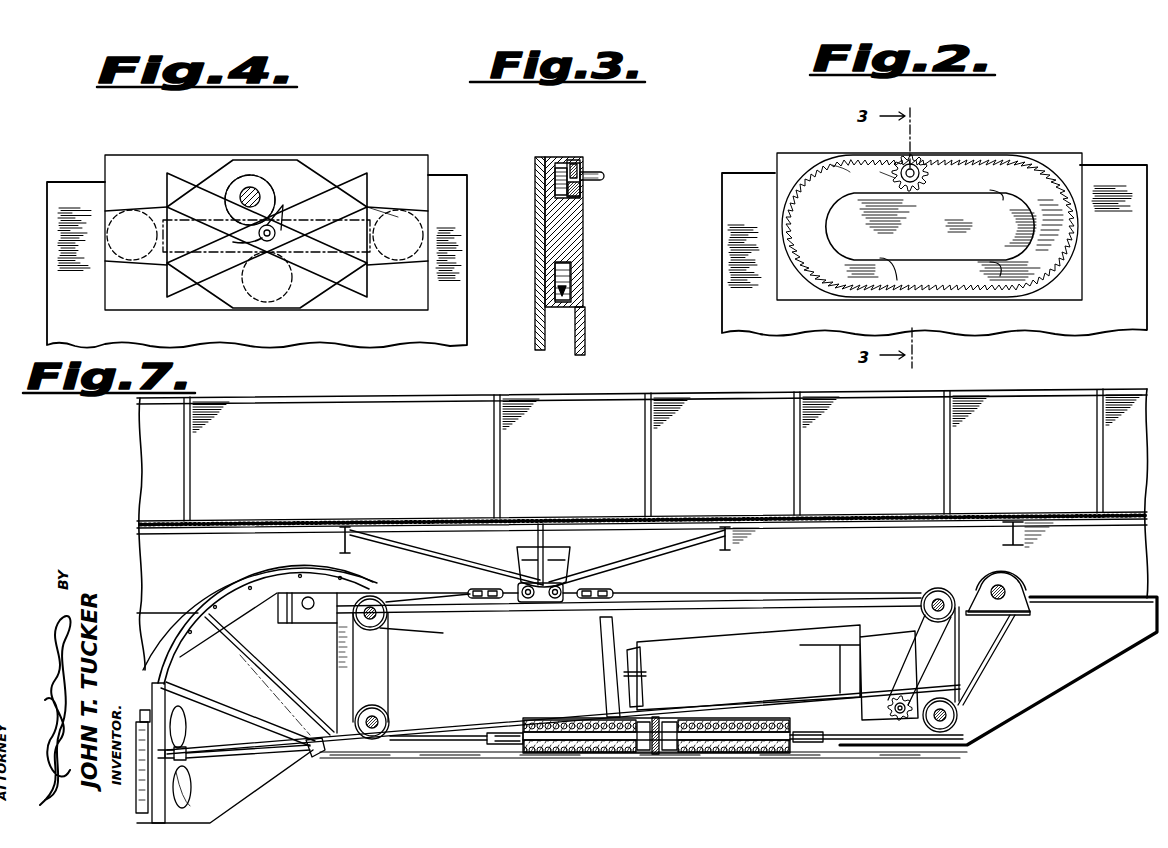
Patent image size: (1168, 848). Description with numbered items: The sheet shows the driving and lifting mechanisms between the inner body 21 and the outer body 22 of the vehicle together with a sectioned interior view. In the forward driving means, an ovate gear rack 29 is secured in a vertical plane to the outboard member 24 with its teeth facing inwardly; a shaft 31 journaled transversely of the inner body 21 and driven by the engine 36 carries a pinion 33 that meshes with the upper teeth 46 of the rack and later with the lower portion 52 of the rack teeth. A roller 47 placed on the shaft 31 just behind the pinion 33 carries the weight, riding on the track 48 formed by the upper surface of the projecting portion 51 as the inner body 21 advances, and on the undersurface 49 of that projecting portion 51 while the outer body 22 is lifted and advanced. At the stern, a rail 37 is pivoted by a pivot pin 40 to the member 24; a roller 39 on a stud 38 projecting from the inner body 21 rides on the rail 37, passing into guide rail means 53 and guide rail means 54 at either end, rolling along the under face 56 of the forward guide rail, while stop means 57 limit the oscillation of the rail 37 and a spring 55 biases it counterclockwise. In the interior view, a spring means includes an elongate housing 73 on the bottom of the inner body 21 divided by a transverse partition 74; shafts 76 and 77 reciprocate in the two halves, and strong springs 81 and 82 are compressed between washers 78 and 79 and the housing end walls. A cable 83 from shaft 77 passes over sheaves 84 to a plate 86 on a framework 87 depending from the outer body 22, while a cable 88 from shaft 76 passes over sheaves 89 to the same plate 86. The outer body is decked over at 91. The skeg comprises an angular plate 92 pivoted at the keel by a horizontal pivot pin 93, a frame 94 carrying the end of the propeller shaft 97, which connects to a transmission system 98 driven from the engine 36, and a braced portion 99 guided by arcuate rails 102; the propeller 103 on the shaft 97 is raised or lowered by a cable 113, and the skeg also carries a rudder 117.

In FIG. 7, the inner body 21 is at (1092, 686).
In FIG. 7, the outer body 22 is at (369, 494).
In FIG. 4, the outboard member 24 is at (73, 195).
In FIG. 2, the outboard member 24 is at (730, 185).
In FIG. 2, the gear rack 29 is at (1003, 160).
In FIG. 3, the shaft 31 is at (600, 174).
In FIG. 2, the shaft 31 is at (908, 168).
In FIG. 7, the shaft 31 is at (1003, 590).
In FIG. 3, the pinion 33 is at (553, 183).
In FIG. 2, the pinion 33 is at (925, 180).
In FIG. 7, the engine 36 is at (727, 645).
In FIG. 4, the rail 37 is at (330, 190).
In FIG. 4, the stud 38 is at (252, 192).
In FIG. 4, the roller 39 is at (238, 187).
In FIG. 4, the pivot pin 40 is at (272, 228).
In FIG. 3, the teeth 46 is at (561, 168).
In FIG. 2, the teeth 46 is at (840, 168).
In FIG. 3, the roller 47 is at (580, 165).
In FIG. 2, the roller 47 is at (885, 175).
In FIG. 3, the track 48 is at (578, 195).
In FIG. 2, the track 48 is at (1003, 200).
In FIG. 3, the undersurface 49 is at (572, 275).
In FIG. 2, the undersurface 49 is at (1000, 264).
In FIG. 3, the projecting portion 51 is at (575, 240).
In FIG. 2, the projecting portion 51 is at (936, 235).
In FIG. 3, the lower portion of rack teeth 52 is at (558, 290).
In FIG. 2, the lower portion of rack teeth 52 is at (897, 280).
In FIG. 4, the guide rail means 53 is at (157, 215).
In FIG. 4, the guide rail means 54 is at (398, 217).
In FIG. 4, the spring 55 is at (233, 242).
In FIG. 4, the under face 56 is at (405, 222).
In FIG. 4, the stop means 57 is at (372, 212).
In FIG. 7, the housing 73 is at (785, 720).
In FIG. 7, the partition 74 is at (655, 754).
In FIG. 7, the shaft 76 is at (598, 752).
In FIG. 7, the shaft 77 is at (740, 752).
In FIG. 7, the washer 78 is at (643, 752).
In FIG. 7, the washer 79 is at (672, 752).
In FIG. 7, the spring 81 is at (557, 752).
In FIG. 7, the spring 82 is at (785, 752).
In FIG. 7, the cable 83 is at (843, 740).
In FIG. 7, the sheaves 84 is at (940, 598).
In FIG. 7, the plate 86 is at (563, 565).
In FIG. 7, the framework 87 is at (455, 562).
In FIG. 7, the cable 88 is at (450, 740).
In FIG. 7, the sheaves 89 is at (376, 628).
In FIG. 7, the deck 91 is at (663, 398).
In FIG. 7, the angular plate 92 is at (270, 778).
In FIG. 7, the pivot pin 93 is at (325, 755).
In FIG. 7, the frame 94 is at (170, 703).
In FIG. 7, the propeller shaft 97 is at (212, 757).
In FIG. 7, the transmission system 98 is at (547, 707).
In FIG. 7, the braced portion 99 is at (188, 624).
In FIG. 7, the arcuate rails 102 is at (208, 618).
In FIG. 7, the propeller 103 is at (188, 786).
In FIG. 7, the cable 113 is at (443, 630).
In FIG. 7, the rudder 117 is at (146, 710).